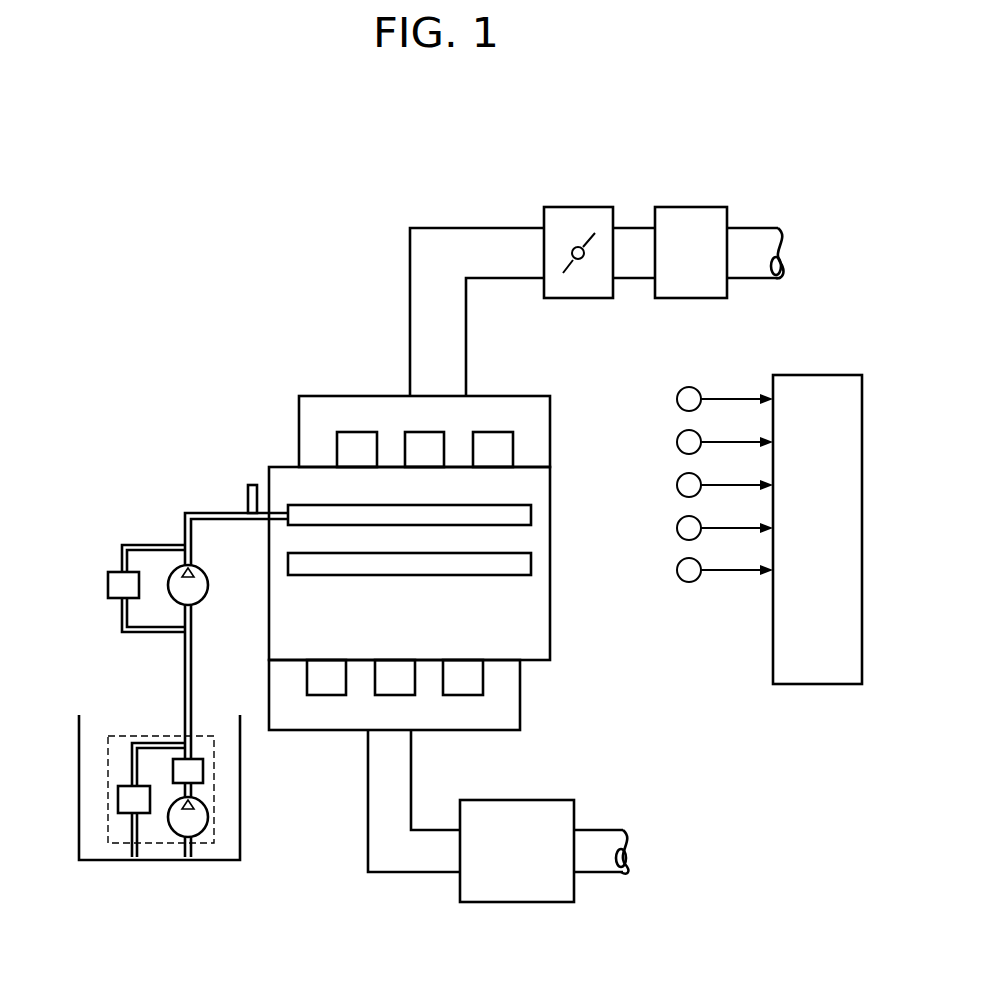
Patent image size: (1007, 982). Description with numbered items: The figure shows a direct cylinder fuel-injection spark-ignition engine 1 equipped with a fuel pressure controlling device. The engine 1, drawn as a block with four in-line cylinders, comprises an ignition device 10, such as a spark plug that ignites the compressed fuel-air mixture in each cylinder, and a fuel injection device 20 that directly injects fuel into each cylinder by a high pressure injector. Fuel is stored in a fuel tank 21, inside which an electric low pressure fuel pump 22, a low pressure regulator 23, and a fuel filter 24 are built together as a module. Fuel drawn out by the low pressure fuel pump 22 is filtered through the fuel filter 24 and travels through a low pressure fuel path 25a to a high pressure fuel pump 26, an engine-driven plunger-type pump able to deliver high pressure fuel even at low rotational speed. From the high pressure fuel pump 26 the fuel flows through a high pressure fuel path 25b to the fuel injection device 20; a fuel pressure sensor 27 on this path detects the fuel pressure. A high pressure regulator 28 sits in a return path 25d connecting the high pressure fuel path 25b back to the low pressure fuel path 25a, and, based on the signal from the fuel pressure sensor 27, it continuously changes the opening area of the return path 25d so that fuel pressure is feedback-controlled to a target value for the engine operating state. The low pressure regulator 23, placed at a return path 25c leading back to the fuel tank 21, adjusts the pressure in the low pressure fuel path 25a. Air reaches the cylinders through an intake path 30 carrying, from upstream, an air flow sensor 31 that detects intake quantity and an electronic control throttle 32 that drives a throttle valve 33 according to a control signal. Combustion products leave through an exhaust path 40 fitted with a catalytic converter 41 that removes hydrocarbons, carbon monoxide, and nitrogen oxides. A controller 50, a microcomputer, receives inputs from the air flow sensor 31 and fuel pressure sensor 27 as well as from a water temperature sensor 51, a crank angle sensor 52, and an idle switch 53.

The direct cylinder fuel-injection spark-ignition engine 1 is at (303, 348).
The ignition device 10 is at (531, 561).
The fuel injection device 20 is at (531, 513).
The fuel tank 21 is at (241, 748).
The low pressure fuel pump 22 is at (209, 816).
The low pressure regulator 23 is at (125, 814).
The fuel filter 24 is at (204, 770).
The low pressure fuel path 25a is at (184, 670).
The high pressure fuel path 25b is at (208, 512).
The return path 25c is at (131, 757).
The return path 25d is at (121, 556).
The high pressure fuel pump 26 is at (209, 585).
The fuel pressure sensor 27 is at (252, 484).
The high pressure regulator 28 is at (113, 599).
The intake path 30 is at (437, 228).
The air flow sensor 31 is at (694, 207).
The electronic control throttle 32 is at (581, 207).
The throttle valve 33 is at (572, 263).
The exhaust path 40 is at (413, 752).
The catalytic converter 41 is at (522, 903).
The controller 50 is at (826, 684).
The water temperature sensor 51 is at (677, 485).
The crank angle sensor 52 is at (677, 528).
The idle switch 53 is at (677, 570).